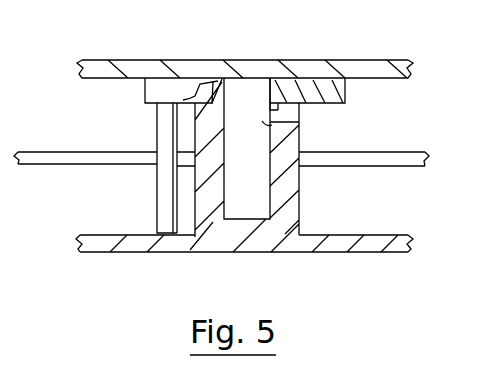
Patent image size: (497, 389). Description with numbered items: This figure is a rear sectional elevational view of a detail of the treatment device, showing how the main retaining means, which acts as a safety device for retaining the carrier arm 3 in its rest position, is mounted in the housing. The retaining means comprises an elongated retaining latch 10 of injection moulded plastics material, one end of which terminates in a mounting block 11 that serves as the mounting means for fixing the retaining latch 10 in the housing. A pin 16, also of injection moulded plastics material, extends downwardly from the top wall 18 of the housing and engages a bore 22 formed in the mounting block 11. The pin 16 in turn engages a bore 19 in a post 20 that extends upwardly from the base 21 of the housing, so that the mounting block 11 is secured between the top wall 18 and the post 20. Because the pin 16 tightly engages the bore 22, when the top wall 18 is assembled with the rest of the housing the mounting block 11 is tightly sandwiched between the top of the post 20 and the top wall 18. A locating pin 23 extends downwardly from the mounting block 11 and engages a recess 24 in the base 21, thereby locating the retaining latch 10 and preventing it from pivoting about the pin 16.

The carrier arm 3 is at (62, 150).
The retaining latch 10 is at (167, 85).
The mounting block 11 is at (328, 78).
The pin 16 is at (268, 113).
The top wall 18 is at (90, 60).
The bore 19 is at (274, 158).
The post 20 is at (288, 191).
The base 21 is at (342, 236).
The bore 22 is at (246, 117).
The locating pin 23 is at (182, 128).
The recess 24 is at (165, 233).